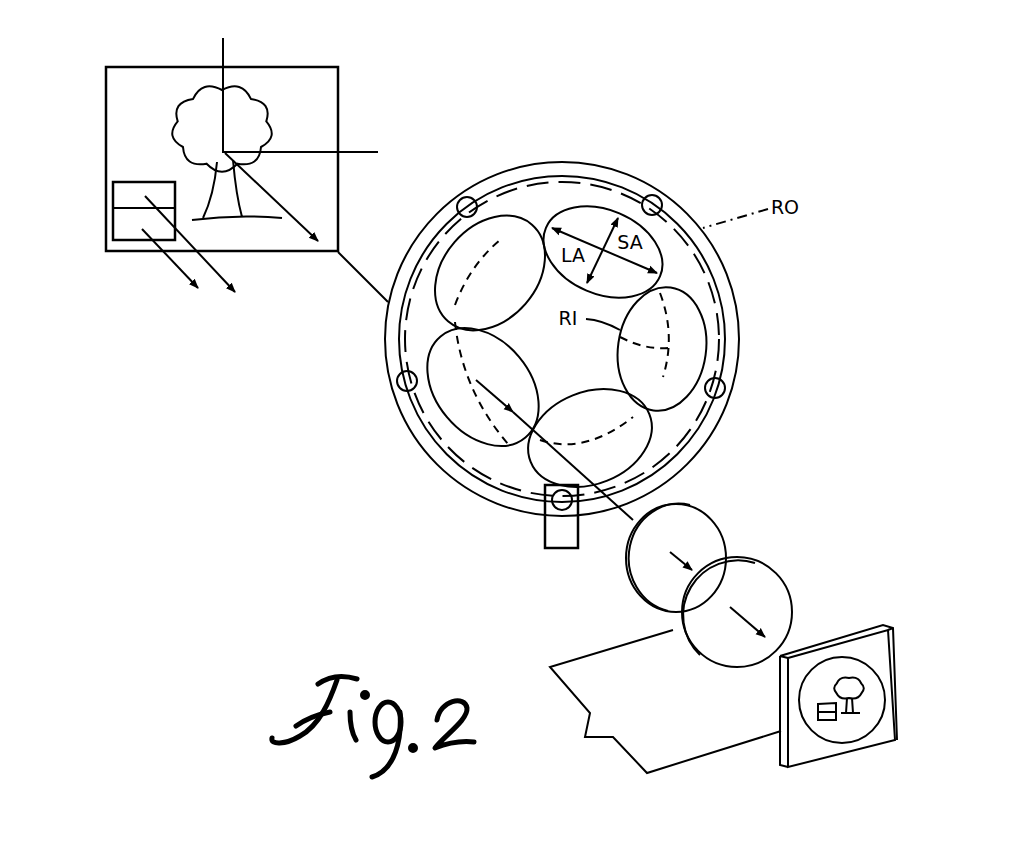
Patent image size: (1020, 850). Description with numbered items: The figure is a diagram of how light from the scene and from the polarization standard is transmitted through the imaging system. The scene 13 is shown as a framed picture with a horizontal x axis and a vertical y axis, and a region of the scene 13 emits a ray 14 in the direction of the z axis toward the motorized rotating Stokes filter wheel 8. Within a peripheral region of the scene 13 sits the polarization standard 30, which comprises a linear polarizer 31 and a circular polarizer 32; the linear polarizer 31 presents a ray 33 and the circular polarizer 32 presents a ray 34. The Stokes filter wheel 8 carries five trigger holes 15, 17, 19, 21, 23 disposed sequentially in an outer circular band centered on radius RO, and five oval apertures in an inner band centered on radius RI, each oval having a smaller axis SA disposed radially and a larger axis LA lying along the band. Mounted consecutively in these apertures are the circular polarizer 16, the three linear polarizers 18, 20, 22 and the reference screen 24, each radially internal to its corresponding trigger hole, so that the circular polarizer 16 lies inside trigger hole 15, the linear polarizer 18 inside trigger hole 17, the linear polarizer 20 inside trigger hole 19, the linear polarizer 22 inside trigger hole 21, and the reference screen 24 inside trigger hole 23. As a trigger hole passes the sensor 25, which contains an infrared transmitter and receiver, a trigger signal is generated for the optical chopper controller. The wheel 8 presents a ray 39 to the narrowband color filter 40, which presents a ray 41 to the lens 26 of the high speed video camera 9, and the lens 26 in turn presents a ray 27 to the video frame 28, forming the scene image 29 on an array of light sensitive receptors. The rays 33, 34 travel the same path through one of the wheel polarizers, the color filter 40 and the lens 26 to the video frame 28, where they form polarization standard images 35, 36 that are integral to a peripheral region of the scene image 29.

The motorized rotating Stokes filter wheel 8 is at (737, 294).
The high speed video camera 9 is at (665, 701).
The scene 13 is at (318, 97).
The ray 14 is at (328, 242).
The trigger hole 15 is at (398, 382).
The circular polarizer 16 is at (447, 418).
The trigger hole 17 is at (467, 197).
The linear polarizer 18 is at (512, 222).
The trigger hole 19 is at (660, 200).
The linear polarizer 20 is at (594, 215).
The trigger hole 21 is at (725, 388).
The linear polarizer 22 is at (705, 340).
The trigger hole 23 is at (552, 512).
The reference screen 24 is at (528, 460).
The sensor 25 is at (548, 548).
The lens 26 is at (773, 587).
The ray 27 is at (748, 624).
The video frame 28 is at (870, 632).
The scene image 29 is at (803, 693).
The polarization standard 30 is at (148, 182).
The linear polarizer 31 is at (122, 193).
The circular polarizer 32 is at (122, 226).
The ray 33 is at (210, 270).
The ray 34 is at (173, 264).
The polarization standard image 35 is at (816, 713).
The polarization standard image 36 is at (830, 718).
The ray 39 is at (478, 381).
The narrowband color filter 40 is at (697, 522).
The ray 41 is at (670, 552).